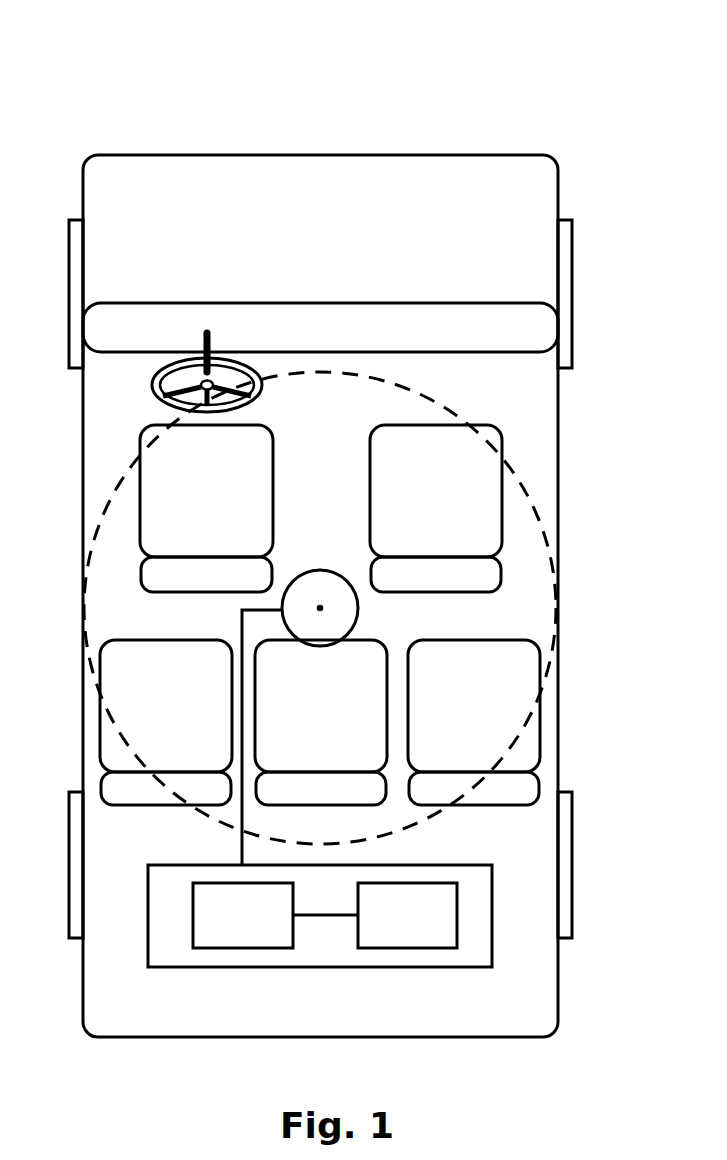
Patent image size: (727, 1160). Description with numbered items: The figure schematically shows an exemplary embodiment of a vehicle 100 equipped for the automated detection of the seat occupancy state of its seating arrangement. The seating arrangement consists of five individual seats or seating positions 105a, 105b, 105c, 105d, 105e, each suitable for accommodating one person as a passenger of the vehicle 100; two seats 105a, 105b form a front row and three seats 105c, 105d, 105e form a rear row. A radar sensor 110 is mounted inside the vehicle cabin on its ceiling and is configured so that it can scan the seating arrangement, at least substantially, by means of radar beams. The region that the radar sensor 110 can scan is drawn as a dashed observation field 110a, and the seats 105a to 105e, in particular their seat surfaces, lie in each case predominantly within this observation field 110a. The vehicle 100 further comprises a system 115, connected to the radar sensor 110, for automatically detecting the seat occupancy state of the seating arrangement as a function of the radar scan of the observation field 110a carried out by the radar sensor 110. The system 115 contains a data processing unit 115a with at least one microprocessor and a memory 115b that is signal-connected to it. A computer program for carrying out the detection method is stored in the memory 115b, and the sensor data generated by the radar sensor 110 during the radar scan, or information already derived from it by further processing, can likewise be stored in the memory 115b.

The vehicle 100 is at (608, 112).
The seat 105a is at (172, 510).
The seat 105b is at (400, 510).
The seat 105c is at (131, 723).
The seat 105d is at (285, 723).
The seat 105e is at (439, 723).
The radar sensor 110 is at (358, 605).
The observation field 110a is at (535, 502).
The system 115 is at (492, 921).
The data processing unit 115a is at (209, 932).
The memory 115b is at (372, 932).